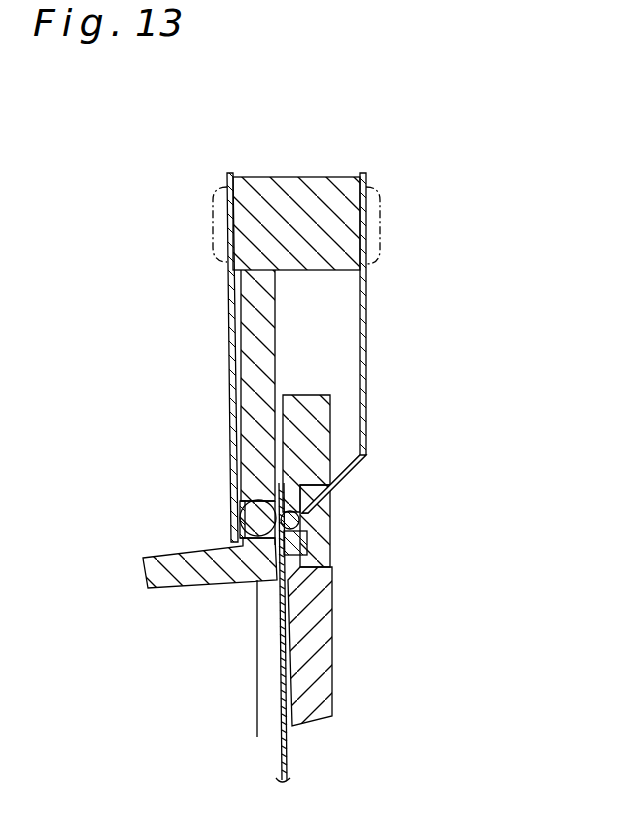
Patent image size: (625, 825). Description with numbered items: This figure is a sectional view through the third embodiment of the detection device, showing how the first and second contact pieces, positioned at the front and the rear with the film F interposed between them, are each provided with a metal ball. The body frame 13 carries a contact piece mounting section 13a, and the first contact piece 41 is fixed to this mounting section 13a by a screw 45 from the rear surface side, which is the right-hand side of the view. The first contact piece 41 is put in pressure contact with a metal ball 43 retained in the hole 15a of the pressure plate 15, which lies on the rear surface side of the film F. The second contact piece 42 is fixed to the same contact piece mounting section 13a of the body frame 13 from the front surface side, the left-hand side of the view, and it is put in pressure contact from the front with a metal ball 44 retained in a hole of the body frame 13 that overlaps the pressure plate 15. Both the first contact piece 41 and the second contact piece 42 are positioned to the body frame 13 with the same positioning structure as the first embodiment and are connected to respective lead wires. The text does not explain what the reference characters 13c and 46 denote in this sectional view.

The body frame 13 is at (229, 352).
The contact piece mounting section 13a is at (286, 200).
The ball 13c is at (238, 484).
The pressure plate 15 is at (333, 668).
The hole of the pressure plate 15a is at (323, 478).
The first contact piece 41 is at (366, 366).
The second contact piece 42 is at (230, 407).
The metal ball 43 is at (287, 538).
The metal ball 44 is at (257, 543).
The screw 45 is at (380, 248).
The cap 46 is at (213, 247).
The film F is at (288, 752).